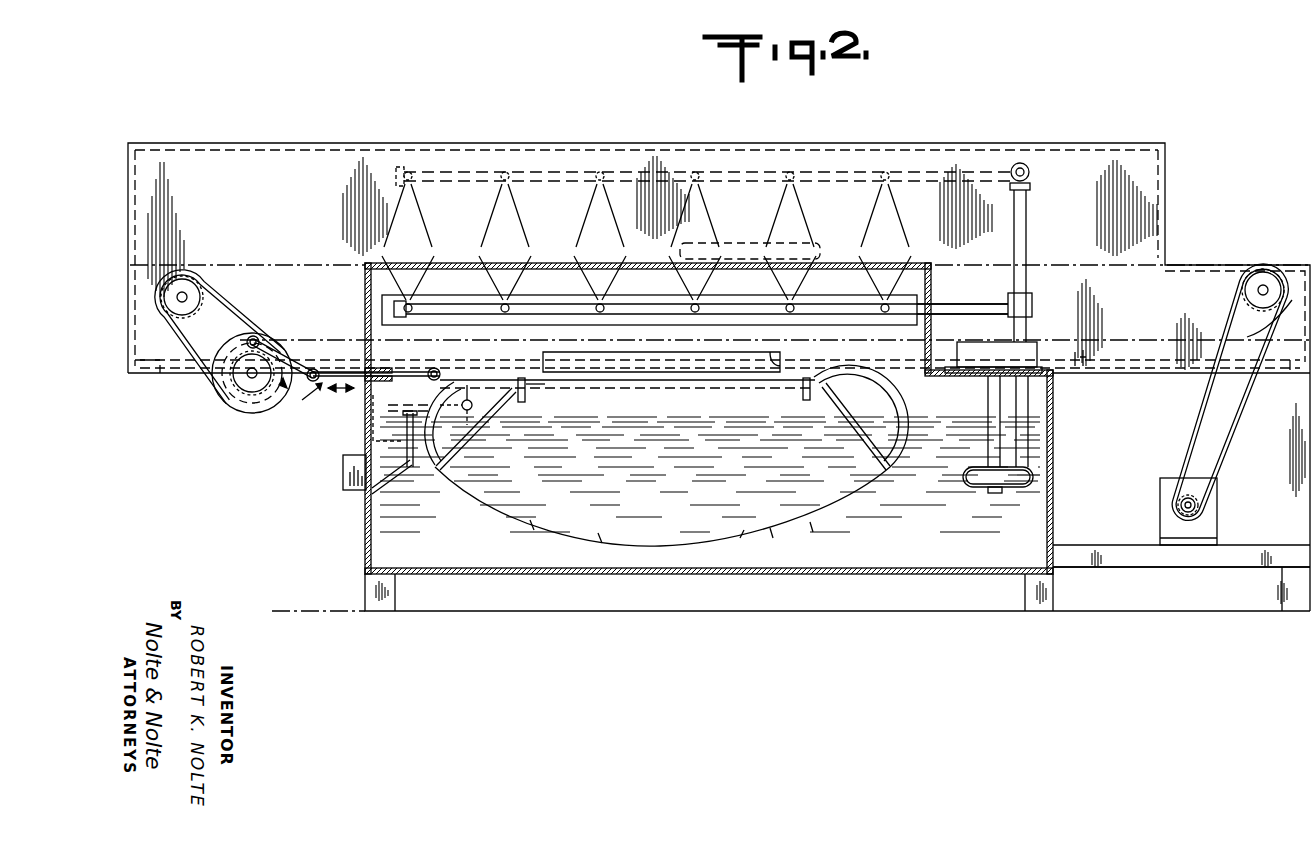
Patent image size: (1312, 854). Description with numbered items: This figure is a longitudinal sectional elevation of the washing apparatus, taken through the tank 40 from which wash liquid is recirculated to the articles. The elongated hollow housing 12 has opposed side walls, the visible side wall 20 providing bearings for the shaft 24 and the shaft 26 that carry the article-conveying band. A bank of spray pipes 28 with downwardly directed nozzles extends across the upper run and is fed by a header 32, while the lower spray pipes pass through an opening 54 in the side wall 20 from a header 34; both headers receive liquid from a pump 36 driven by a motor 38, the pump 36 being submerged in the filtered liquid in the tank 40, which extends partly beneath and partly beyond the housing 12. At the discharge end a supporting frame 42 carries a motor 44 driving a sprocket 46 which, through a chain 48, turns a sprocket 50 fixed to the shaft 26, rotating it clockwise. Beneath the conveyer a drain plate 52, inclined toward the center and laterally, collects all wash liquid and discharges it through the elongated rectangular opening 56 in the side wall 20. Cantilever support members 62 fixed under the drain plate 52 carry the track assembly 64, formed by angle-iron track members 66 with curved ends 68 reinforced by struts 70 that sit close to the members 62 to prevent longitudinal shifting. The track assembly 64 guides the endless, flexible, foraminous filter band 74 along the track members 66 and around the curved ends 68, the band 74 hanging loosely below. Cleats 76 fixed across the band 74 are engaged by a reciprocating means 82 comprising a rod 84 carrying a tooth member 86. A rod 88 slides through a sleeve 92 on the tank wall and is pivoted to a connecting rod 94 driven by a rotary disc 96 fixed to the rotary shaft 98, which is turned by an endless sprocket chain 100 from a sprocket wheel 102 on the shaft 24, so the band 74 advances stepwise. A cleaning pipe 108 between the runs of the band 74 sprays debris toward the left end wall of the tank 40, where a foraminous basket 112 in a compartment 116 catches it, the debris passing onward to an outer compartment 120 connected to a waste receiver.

The elongated hollow housing 12 is at (130, 143).
The side wall 20 is at (322, 227).
The shaft 24 is at (182, 290).
The shaft 26 is at (1268, 288).
The bank of spray pipes 28 is at (770, 152).
The header 32 is at (1027, 222).
The header 34 is at (988, 303).
The pump 36 is at (968, 485).
The motor 38 is at (1040, 345).
The tank 40 is at (490, 578).
The supporting frame 42 is at (1232, 568).
The motor 44 is at (1168, 524).
The sprocket 46 is at (1180, 502).
The chain 48 is at (1196, 420).
The sprocket 50 is at (1240, 290).
The drain plate 52 is at (135, 378).
The opening 54 is at (560, 300).
The opening 56 is at (778, 362).
The cantilever support member 62 is at (526, 396).
The track assembly 64 is at (655, 552).
The track member 66 is at (730, 388).
The curved end 68 is at (900, 392).
The strut 70 is at (500, 416).
The filter band 74 is at (775, 538).
The cleat 76 is at (533, 528).
The reciprocating means 82 is at (308, 405).
The rod 84 is at (468, 385).
The tooth member 86 is at (532, 383).
The rod 88 is at (343, 372).
The sleeve 92 is at (360, 396).
The connecting rod 94 is at (298, 355).
The rotary disc 96 is at (236, 400).
The rotary shaft 98 is at (240, 382).
The endless sprocket chain 100 is at (222, 300).
The sprocket wheel 102 is at (196, 292).
The pipe 108 is at (458, 388).
The foraminous basket 112 is at (375, 446).
The compartment 116 is at (380, 488).
The compartment 120 is at (347, 476).